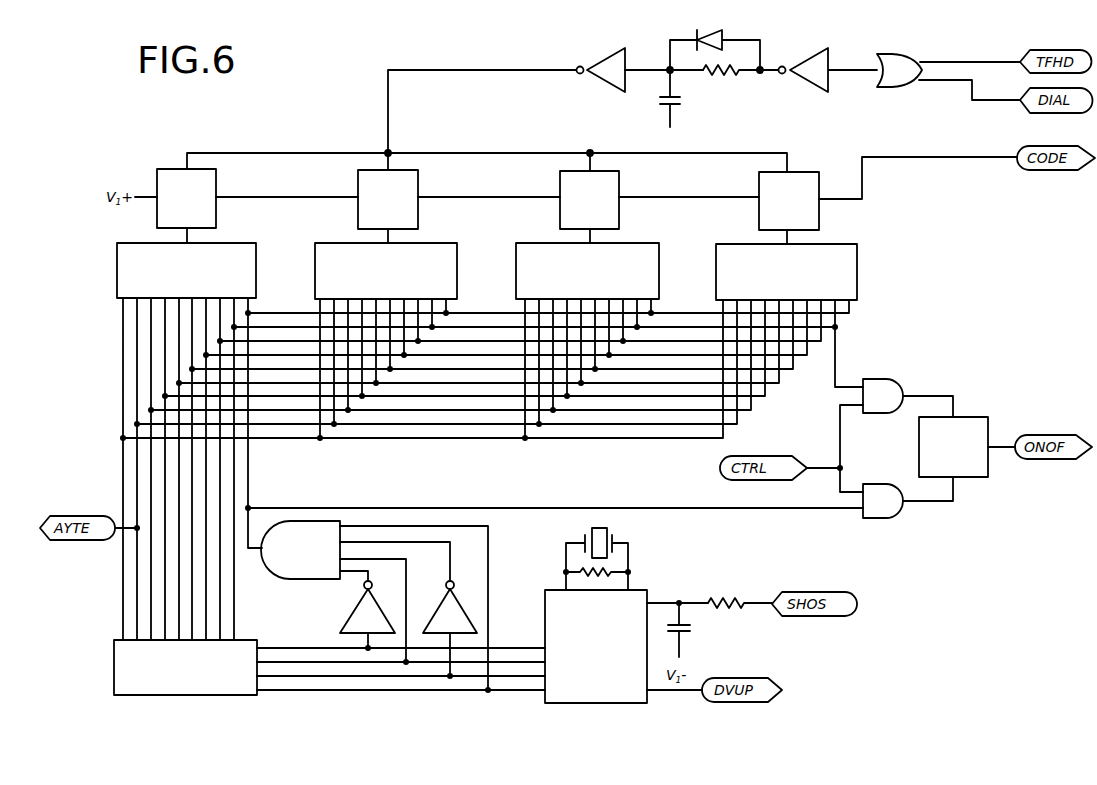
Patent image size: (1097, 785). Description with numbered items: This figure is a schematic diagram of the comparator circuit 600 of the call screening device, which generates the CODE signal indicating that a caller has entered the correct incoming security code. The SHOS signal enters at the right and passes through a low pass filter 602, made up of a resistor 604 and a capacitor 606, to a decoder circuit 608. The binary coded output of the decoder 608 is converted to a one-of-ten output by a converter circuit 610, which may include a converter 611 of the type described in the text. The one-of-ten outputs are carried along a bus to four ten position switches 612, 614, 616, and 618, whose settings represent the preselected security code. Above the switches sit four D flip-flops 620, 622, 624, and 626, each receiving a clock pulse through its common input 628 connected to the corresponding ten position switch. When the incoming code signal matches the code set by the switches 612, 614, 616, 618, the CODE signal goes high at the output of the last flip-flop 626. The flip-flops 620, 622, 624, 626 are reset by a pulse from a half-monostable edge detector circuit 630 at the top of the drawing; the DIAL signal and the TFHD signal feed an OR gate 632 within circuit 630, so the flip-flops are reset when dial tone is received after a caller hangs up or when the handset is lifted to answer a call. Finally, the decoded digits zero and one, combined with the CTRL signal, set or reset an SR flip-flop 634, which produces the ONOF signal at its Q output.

The comparator circuit 600 is at (938, 268).
The low pass filter 602 is at (690, 587).
The resistor 604 is at (748, 607).
The capacitor 606 is at (690, 631).
The decoder circuit 608 is at (545, 697).
The converter circuit 610 is at (312, 611).
The 4028 type converter 611 is at (248, 695).
The ten position switch 612 is at (117, 283).
The ten position switch 614 is at (315, 257).
The ten position switch 616 is at (516, 272).
The ten position switch 618 is at (716, 262).
The D flip-flop 620 is at (165, 168).
The D flip-flop 622 is at (358, 186).
The D flip-flop 624 is at (560, 184).
The D flip-flop 626 is at (759, 188).
The common input 628 is at (189, 237).
The half-monostable edge detector circuit 630 is at (774, 40).
The OR gate 632 is at (910, 56).
The SR flip-flop 634 is at (975, 417).